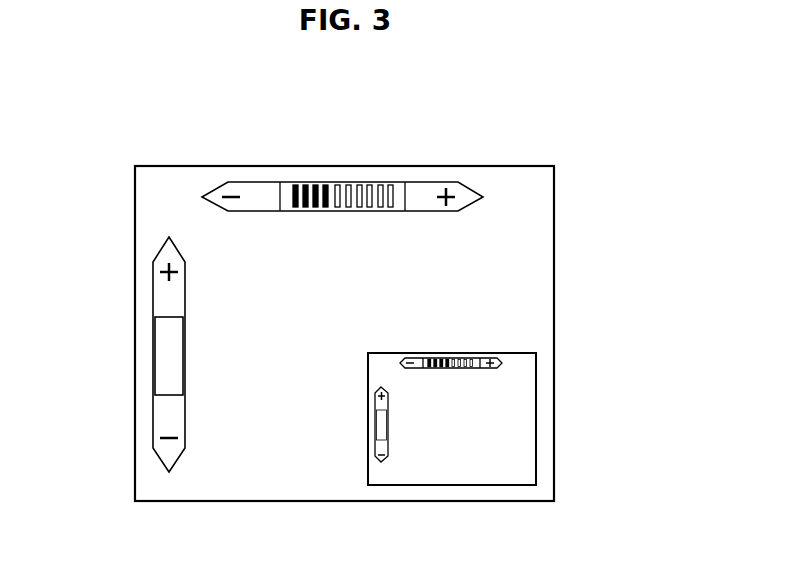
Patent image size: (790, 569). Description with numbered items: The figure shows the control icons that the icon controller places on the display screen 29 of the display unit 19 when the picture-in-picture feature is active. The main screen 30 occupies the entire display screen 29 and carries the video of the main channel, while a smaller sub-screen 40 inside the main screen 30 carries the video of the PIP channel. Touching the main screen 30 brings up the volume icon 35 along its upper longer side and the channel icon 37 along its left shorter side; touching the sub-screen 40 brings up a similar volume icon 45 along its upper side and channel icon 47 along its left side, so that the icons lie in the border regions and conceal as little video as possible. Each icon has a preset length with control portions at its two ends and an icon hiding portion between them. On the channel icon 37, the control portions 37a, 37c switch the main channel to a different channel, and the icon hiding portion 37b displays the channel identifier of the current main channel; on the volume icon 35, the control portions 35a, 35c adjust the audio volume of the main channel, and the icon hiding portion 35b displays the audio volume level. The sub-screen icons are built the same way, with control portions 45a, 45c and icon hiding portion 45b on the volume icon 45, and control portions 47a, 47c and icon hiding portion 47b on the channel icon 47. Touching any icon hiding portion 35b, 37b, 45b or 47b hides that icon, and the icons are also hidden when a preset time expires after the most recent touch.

The display unit 19 is at (205, 160).
The display screen 29 is at (678, 275).
The main screen 30 is at (554, 275).
The volume icon 35 is at (342, 192).
The control portion 35a is at (271, 211).
The icon hiding portion 35b is at (345, 211).
The control portion 35c is at (433, 211).
The channel icon 37 is at (167, 354).
The control portion 37a is at (155, 300).
The icon hiding portion 37b is at (185, 358).
The control portion 37c is at (180, 412).
The sub-screen 40 is at (536, 377).
The volume icon 45 is at (501, 388).
The control portion 45a is at (412, 370).
The icon hiding portion 45b is at (450, 357).
The control portion 45c is at (492, 352).
The channel icon 47 is at (382, 464).
The control portion 47a is at (376, 400).
The icon hiding portion 47b is at (388, 427).
The control portion 47c is at (388, 455).